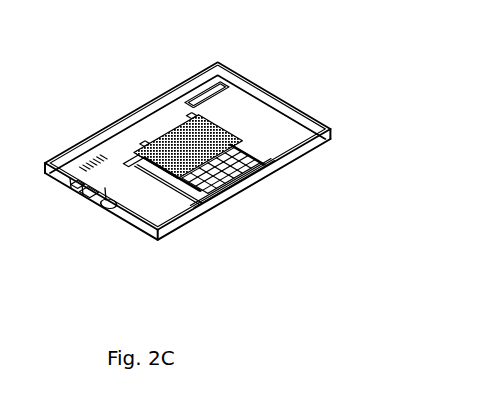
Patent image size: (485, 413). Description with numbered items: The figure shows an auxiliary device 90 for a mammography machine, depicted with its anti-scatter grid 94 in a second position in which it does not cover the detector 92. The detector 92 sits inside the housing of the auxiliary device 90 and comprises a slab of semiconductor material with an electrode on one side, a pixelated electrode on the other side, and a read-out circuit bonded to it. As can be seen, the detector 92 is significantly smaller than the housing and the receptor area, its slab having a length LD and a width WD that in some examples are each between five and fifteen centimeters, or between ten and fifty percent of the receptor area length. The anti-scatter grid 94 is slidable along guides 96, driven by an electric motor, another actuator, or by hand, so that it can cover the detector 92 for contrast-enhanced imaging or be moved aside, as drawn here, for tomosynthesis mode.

The auxiliary device 90 is at (292, 64).
The detector 92 is at (247, 138).
The anti-scatter grid 94 is at (189, 126).
The guides 96 is at (198, 180).
The width of the slab of semiconductor material WD is at (201, 192).
The length of the slab of semiconductor material LD is at (262, 186).